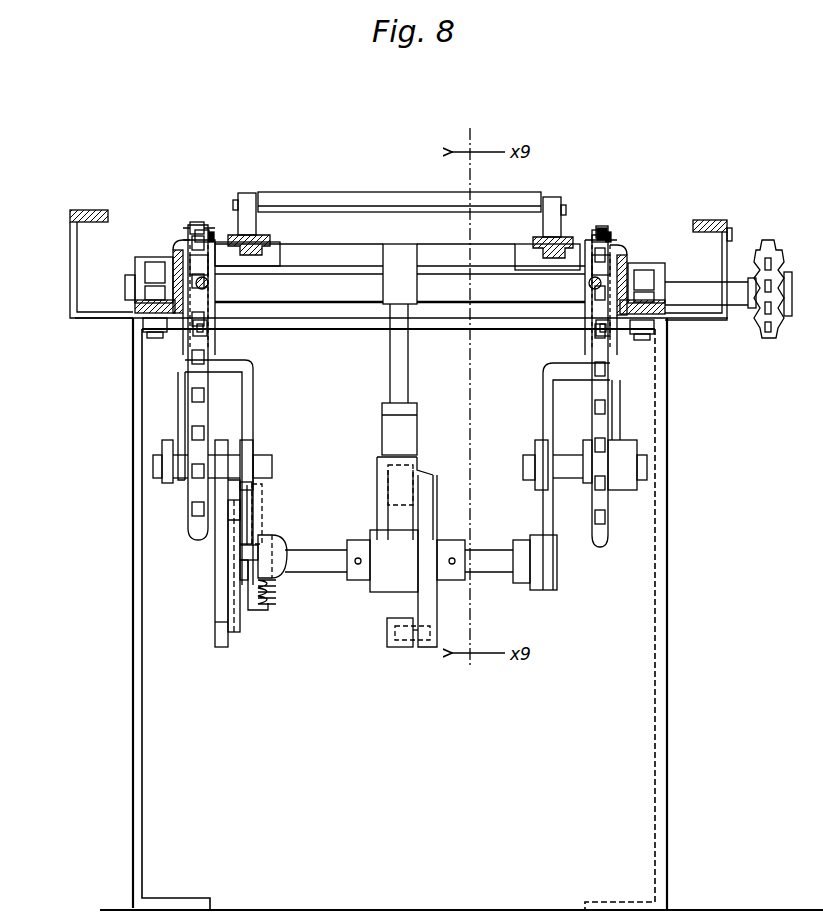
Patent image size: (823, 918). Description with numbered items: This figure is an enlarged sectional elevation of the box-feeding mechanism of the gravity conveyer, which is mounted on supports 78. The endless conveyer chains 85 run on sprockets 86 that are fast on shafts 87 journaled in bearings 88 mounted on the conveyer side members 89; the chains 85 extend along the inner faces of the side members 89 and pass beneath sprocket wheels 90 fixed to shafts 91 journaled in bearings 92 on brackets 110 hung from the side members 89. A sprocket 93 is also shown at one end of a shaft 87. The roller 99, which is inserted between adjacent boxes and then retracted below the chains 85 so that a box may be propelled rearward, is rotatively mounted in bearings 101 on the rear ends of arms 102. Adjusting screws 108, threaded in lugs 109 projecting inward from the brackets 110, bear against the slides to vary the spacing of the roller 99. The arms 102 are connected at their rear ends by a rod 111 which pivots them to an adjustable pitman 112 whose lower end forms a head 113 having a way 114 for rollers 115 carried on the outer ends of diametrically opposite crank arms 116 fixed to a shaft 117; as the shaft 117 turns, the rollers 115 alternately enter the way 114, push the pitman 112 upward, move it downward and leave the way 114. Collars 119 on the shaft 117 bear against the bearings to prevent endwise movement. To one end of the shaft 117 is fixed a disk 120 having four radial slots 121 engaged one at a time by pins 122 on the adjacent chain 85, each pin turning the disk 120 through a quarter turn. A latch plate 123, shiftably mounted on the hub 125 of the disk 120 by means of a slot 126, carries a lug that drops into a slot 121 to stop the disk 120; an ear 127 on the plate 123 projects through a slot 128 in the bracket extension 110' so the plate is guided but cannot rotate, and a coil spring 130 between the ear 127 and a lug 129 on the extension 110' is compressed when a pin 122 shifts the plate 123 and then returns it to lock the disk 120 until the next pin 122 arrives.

The supports 78 is at (133, 617).
The endless conveyer chains 85 is at (210, 350).
The sprockets 86 is at (210, 330).
The shafts 87 is at (685, 290).
The bearings 88 is at (140, 257).
The side members 89 is at (178, 250).
The sprocket wheels 90 is at (195, 535).
The shafts 91 is at (272, 466).
The bearings 92 is at (168, 455).
The sprocket 93 is at (768, 240).
The roller 99 is at (352, 190).
The bearings 101 is at (243, 210).
The arms 102 is at (230, 238).
The adjusting screws 108 is at (210, 285).
The lugs 109 is at (220, 303).
The brackets 110 is at (351, 470).
The bracket extension 110' is at (281, 515).
The rod 111 is at (328, 256).
The adjustable pitman 112 is at (405, 370).
The head 113 is at (395, 455).
The way 114 is at (420, 462).
The rollers 115 is at (430, 478).
The crank arms 116 is at (437, 598).
The shaft 117 is at (335, 570).
The collars 119 is at (520, 583).
The disk 120 is at (215, 596).
The slots 121 is at (215, 630).
The pins 122 is at (188, 228).
The latch plate 123 is at (236, 632).
The hub 125 is at (250, 505).
The slot 126 is at (255, 500).
The ear 127 is at (290, 543).
The slot 128 is at (248, 509).
The lug 129 is at (270, 606).
The coil spring 130 is at (270, 598).